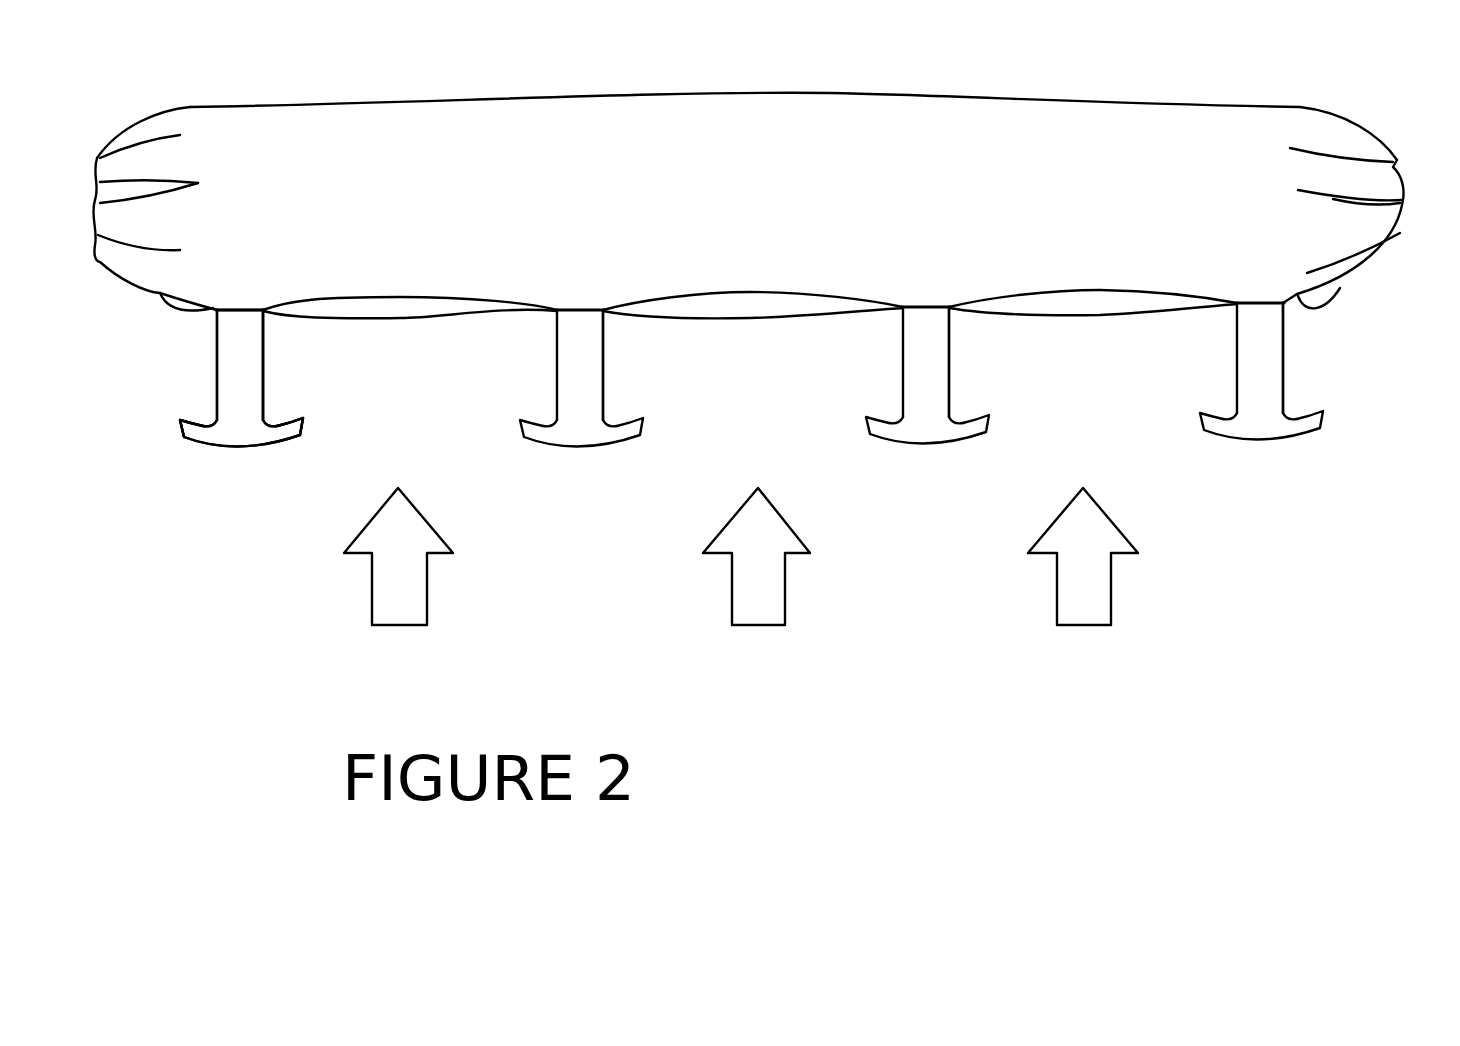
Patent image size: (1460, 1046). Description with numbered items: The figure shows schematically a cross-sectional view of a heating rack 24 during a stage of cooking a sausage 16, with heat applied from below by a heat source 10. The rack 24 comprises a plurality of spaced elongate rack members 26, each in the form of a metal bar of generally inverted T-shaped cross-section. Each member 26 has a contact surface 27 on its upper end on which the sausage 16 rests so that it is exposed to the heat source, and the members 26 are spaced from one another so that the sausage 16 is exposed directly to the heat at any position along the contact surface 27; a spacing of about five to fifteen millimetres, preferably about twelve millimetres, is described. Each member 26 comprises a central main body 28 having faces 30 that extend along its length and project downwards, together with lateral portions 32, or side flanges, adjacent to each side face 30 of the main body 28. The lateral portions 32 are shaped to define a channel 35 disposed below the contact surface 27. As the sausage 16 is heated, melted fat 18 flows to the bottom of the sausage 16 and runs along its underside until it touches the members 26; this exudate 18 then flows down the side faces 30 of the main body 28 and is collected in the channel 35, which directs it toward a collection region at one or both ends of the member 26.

The heat source 10 is at (412, 612).
The sausage 16 is at (715, 201).
The exudate 18 is at (190, 310).
The rack 24 is at (200, 377).
The elongate rack member 26 is at (300, 397).
The contact surface 27 is at (242, 304).
The central main body 28 is at (258, 370).
The face 30 is at (215, 319).
The lateral portion 32 is at (273, 443).
The channel 35 is at (180, 413).